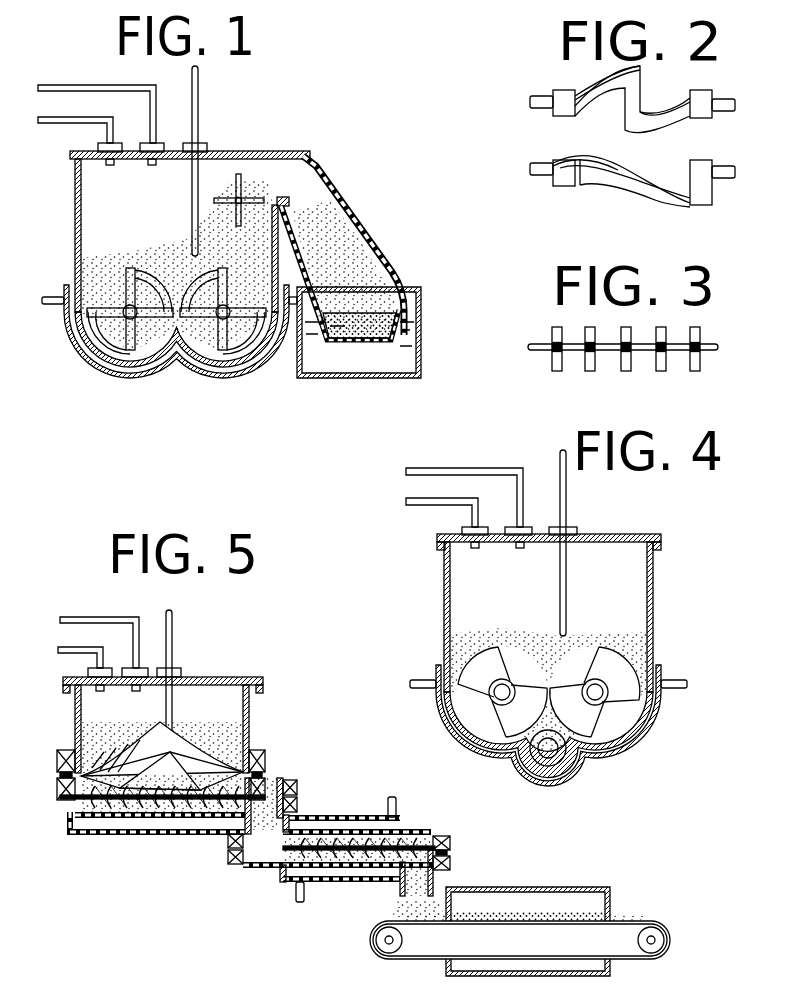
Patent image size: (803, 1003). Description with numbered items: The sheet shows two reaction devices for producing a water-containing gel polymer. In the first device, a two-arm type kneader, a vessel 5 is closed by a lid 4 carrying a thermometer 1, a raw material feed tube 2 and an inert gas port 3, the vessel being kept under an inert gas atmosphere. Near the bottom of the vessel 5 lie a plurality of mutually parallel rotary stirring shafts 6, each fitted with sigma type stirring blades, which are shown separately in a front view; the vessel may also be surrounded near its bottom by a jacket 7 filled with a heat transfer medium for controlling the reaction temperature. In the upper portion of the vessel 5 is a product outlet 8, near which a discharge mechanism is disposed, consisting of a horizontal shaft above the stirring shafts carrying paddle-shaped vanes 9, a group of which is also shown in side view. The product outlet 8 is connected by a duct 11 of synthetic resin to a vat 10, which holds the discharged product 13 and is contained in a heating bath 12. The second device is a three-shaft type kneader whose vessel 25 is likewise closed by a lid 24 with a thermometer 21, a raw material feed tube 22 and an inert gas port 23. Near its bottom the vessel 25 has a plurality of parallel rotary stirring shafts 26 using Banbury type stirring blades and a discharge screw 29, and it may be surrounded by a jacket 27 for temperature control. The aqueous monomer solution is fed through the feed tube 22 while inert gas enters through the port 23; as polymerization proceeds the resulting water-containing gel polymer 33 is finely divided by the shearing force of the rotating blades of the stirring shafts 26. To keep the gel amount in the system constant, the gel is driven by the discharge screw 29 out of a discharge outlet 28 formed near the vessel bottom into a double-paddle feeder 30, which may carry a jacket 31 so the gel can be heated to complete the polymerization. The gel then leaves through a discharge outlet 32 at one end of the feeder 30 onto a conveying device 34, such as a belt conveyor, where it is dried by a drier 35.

In FIG. 1, the thermometer 1 is at (200, 99).
In FIG. 1, the raw material feed tube 2 is at (71, 85).
In FIG. 1, the inert gas port 3 is at (52, 120).
In FIG. 1, the lid 4 is at (272, 151).
In FIG. 1, the vessel 5 is at (75, 236).
In FIG. 1, the rotary stirring shafts 6 is at (105, 350).
In FIG. 2, the rotary stirring shafts 6 is at (652, 128).
In FIG. 1, the heating jacket 7 is at (139, 375).
In FIG. 1, the product outlet 8 is at (289, 172).
In FIG. 1, the stirrer 9 is at (238, 174).
In FIG. 3, the stirrer 9 is at (588, 362).
In FIG. 1, the vat 10 is at (375, 345).
In FIG. 1, the duct 11 is at (372, 230).
In FIG. 1, the trough 12 is at (312, 378).
In FIG. 1, the mixed material 13 is at (370, 310).
In FIG. 4, the thermometer 21 is at (567, 505).
In FIG. 5, the thermometer 21 is at (173, 635).
In FIG. 4, the raw material feed tube 22 is at (467, 468).
In FIG. 5, the raw material feed tube 22 is at (92, 617).
In FIG. 4, the inert gas port 23 is at (430, 505).
In FIG. 5, the inert gas port 23 is at (72, 653).
In FIG. 4, the lid 24 is at (631, 538).
In FIG. 5, the lid 24 is at (228, 677).
In FIG. 4, the vessel 25 is at (444, 606).
In FIG. 5, the vessel 25 is at (75, 712).
In FIG. 4, the rotary stirring shafts 26 is at (498, 720).
In FIG. 5, the rotary stirring shafts 26 is at (220, 762).
In FIG. 4, the heating jacket 27 is at (654, 725).
In FIG. 5, the heating jacket 27 is at (100, 834).
In FIG. 5, the discharge outlet 28 is at (236, 818).
In FIG. 4, the discharge screw 29 is at (552, 760).
In FIG. 5, the discharge screw 29 is at (131, 802).
In FIG. 5, the double-paddle feeder 30 is at (358, 840).
In FIG. 5, the jacket 31 is at (320, 882).
In FIG. 5, the discharge outlet 32 is at (430, 888).
In FIG. 5, the water-containing gel polymer 33 is at (96, 732).
In FIG. 5, the conveying device 34 is at (413, 960).
In FIG. 5, the drier 35 is at (530, 887).